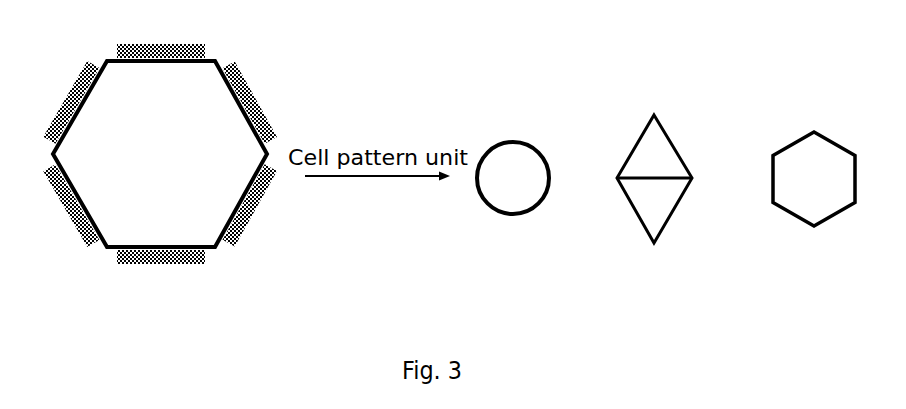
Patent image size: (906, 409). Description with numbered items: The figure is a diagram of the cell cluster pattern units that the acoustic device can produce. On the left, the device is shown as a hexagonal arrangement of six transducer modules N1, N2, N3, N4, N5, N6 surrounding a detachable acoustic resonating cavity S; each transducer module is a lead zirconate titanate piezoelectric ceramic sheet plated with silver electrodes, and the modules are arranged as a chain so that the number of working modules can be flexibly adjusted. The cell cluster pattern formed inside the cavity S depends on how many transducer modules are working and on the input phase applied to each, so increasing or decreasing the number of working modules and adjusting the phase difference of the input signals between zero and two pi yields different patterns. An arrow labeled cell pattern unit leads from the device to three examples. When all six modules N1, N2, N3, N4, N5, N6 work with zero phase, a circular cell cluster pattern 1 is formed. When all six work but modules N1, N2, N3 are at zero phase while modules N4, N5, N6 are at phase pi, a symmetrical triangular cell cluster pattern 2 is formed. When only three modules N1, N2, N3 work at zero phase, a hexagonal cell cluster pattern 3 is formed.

The detachable acoustic resonating cavity S is at (160, 154).
The transducer module N1 is at (61, 102).
The transducer module N2 is at (161, 34).
The transducer module N3 is at (256, 102).
The transducer module N4 is at (257, 205).
The transducer module N5 is at (161, 275).
The transducer module N6 is at (62, 205).
The circular cell cluster pattern 1 is at (513, 139).
The symmetrical triangular cell cluster pattern 2 is at (654, 154).
The hexagonal cell cluster pattern 3 is at (814, 145).